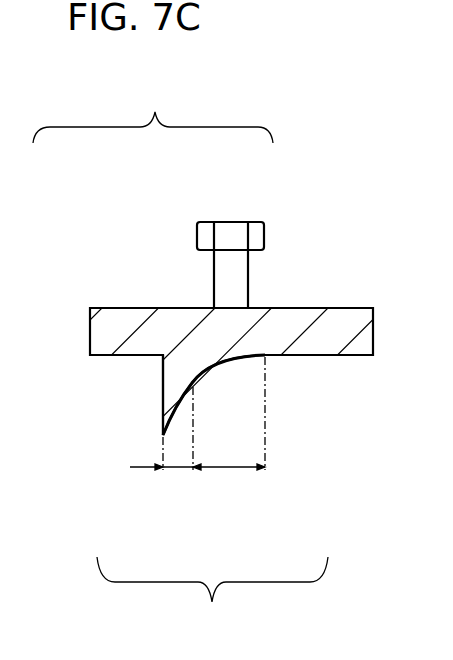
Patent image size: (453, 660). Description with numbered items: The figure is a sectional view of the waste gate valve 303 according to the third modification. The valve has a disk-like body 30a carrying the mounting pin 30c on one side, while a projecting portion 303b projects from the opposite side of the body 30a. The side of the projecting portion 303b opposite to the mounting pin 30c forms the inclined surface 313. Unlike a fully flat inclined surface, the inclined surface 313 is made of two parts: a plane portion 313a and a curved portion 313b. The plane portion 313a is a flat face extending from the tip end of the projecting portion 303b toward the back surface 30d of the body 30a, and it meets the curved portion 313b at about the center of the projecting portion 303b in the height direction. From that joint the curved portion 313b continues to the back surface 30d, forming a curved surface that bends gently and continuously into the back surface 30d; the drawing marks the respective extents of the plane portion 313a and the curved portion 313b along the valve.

The waste gate valve 303 is at (153, 112).
The body 30a is at (110, 333).
The projecting portion 303b is at (177, 365).
The mounting pin 30c is at (230, 232).
The back surface 30d is at (325, 353).
The inclined surface 313 is at (212, 597).
The plane portion 313a is at (182, 467).
The curved portion 313b is at (227, 467).